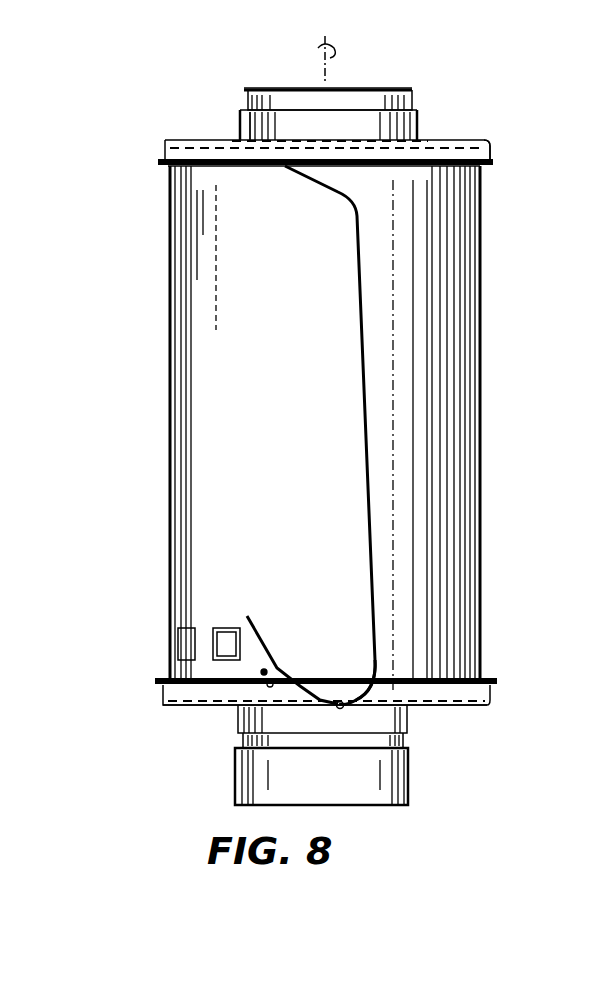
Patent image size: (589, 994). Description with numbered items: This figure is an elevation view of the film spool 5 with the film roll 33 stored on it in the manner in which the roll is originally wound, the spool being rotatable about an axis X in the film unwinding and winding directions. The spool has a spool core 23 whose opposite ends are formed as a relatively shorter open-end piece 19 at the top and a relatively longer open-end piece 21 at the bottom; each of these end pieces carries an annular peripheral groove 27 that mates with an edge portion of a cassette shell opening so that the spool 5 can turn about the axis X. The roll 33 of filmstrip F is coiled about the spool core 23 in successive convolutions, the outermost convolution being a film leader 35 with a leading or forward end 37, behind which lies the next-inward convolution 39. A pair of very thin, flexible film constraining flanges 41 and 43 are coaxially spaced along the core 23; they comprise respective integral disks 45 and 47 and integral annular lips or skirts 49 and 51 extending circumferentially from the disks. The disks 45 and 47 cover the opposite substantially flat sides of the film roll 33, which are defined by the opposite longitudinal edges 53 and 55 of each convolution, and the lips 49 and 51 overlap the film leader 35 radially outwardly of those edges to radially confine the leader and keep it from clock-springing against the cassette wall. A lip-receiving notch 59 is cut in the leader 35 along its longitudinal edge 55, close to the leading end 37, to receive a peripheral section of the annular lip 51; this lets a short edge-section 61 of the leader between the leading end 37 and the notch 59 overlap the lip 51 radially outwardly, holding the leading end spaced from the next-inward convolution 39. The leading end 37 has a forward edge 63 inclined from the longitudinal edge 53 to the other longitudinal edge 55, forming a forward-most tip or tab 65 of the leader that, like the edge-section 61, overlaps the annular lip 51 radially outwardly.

The film spool 5 is at (156, 480).
The shorter open-end piece 19 is at (412, 90).
The longer open-end piece 21 is at (235, 800).
The spool core 23 is at (238, 95).
The annular peripheral groove 27 is at (246, 110).
The film roll 33 is at (168, 424).
The film leader 35 is at (168, 378).
The leading end 37 is at (326, 456).
The next-inward convolution 39 is at (420, 356).
The upper film constraining flange 41 is at (165, 147).
The lower film constraining flange 43 is at (163, 700).
The disk of upper flange 45 is at (455, 138).
The disk of lower flange 47 is at (172, 706).
The annular lip of upper flange 49 is at (170, 156).
The annular lip of lower flange 51 is at (164, 692).
The longitudinal edge 53 is at (190, 135).
The longitudinal edge 55 is at (186, 712).
The lip-receiving notch 59 is at (260, 670).
The edge-section 61 is at (340, 700).
The forward edge 63 is at (372, 376).
The forward-most tip or tab 65 is at (355, 692).
The filmstrip F is at (176, 297).
The axis X is at (345, 52).